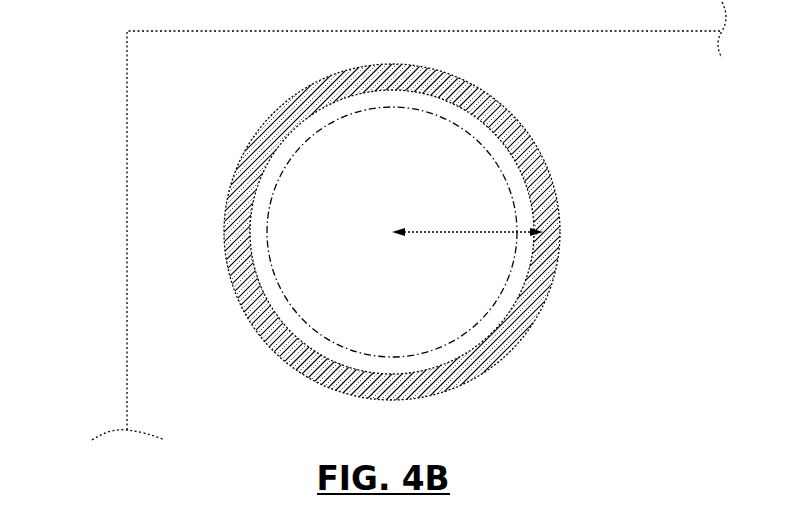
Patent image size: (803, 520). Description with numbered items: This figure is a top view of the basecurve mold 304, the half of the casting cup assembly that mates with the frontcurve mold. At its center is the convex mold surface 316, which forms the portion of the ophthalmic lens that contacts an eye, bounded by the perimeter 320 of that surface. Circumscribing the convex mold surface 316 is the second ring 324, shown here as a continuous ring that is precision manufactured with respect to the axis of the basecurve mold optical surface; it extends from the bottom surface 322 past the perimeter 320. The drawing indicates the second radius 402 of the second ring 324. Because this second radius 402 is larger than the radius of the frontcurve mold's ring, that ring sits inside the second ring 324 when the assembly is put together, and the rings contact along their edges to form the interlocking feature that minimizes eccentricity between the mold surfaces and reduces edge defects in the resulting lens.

The basecurve mold 304 is at (190, 70).
The convex mold surface 316 is at (394, 153).
The perimeter 320 is at (266, 224).
The bottom surface 322 is at (610, 196).
The second ring 324 is at (232, 278).
The second radius 402 is at (467, 222).